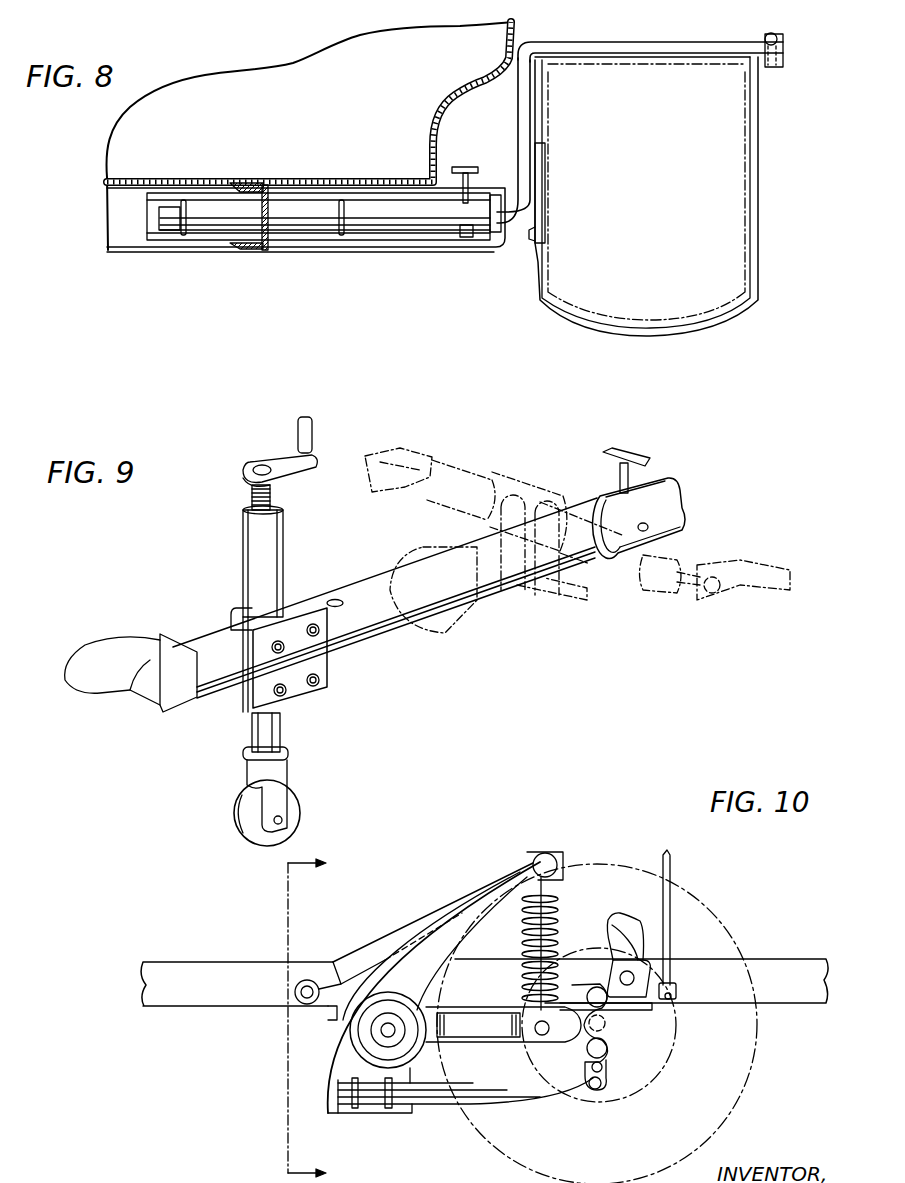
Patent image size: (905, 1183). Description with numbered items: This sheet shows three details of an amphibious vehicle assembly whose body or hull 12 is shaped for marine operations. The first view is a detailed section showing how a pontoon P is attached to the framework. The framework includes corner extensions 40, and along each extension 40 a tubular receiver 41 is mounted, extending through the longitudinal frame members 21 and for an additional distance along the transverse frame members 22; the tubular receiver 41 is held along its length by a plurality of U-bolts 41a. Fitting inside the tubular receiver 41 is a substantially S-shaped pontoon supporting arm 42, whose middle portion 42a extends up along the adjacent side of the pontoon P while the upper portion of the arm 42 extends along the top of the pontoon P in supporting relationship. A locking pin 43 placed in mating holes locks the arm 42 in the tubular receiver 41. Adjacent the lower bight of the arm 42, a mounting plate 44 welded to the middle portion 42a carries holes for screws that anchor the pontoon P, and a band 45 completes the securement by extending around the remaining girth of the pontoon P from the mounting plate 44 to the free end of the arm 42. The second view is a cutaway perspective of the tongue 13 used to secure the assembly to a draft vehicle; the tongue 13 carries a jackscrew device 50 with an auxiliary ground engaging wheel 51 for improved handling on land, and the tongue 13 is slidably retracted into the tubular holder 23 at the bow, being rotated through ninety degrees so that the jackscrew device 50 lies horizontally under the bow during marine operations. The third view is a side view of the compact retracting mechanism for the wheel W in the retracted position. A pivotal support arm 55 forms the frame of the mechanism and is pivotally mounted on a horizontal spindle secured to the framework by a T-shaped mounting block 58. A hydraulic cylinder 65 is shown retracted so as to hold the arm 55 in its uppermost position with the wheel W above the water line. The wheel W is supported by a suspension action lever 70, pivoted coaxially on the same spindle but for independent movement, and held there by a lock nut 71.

In FIG. 9, the tongue 13 is at (368, 588).
In FIG. 8, the longitudinal frame members 21 is at (253, 250).
In FIG. 10, the longitudinal frame members 21 is at (212, 1000).
In FIG. 8, the transverse frame members 22 is at (116, 218).
In FIG. 9, the tubular holder 23 is at (656, 480).
In FIG. 8, the extensions 40 is at (388, 241).
In FIG. 8, the tubular receiver 41 is at (313, 214).
In FIG. 8, the U-bolts 41a is at (181, 236).
In FIG. 8, the pontoon supporting arm 42 is at (611, 46).
In FIG. 8, the middle portion of the arm 42a is at (519, 123).
In FIG. 8, the locking pin 43 is at (467, 165).
In FIG. 8, the mounting plate 44 is at (546, 210).
In FIG. 8, the band 45 is at (577, 326).
In FIG. 8, the pontoon P is at (733, 164).
In FIG. 9, the jackscrew device 50 is at (250, 556).
In FIG. 9, the auxiliary ground engaging wheel 51 is at (291, 805).
In FIG. 10, the body or hull 12 is at (325, 1019).
In FIG. 10, the pivotal support arm 55 is at (427, 940).
In FIG. 10, the T-shaped mounting block 58 is at (330, 1013).
In FIG. 10, the hydraulic cylinder 65 is at (370, 950).
In FIG. 10, the suspension action lever 70 is at (513, 1031).
In FIG. 10, the lock nut 71 is at (398, 1033).
In FIG. 10, the wheel W is at (758, 1075).